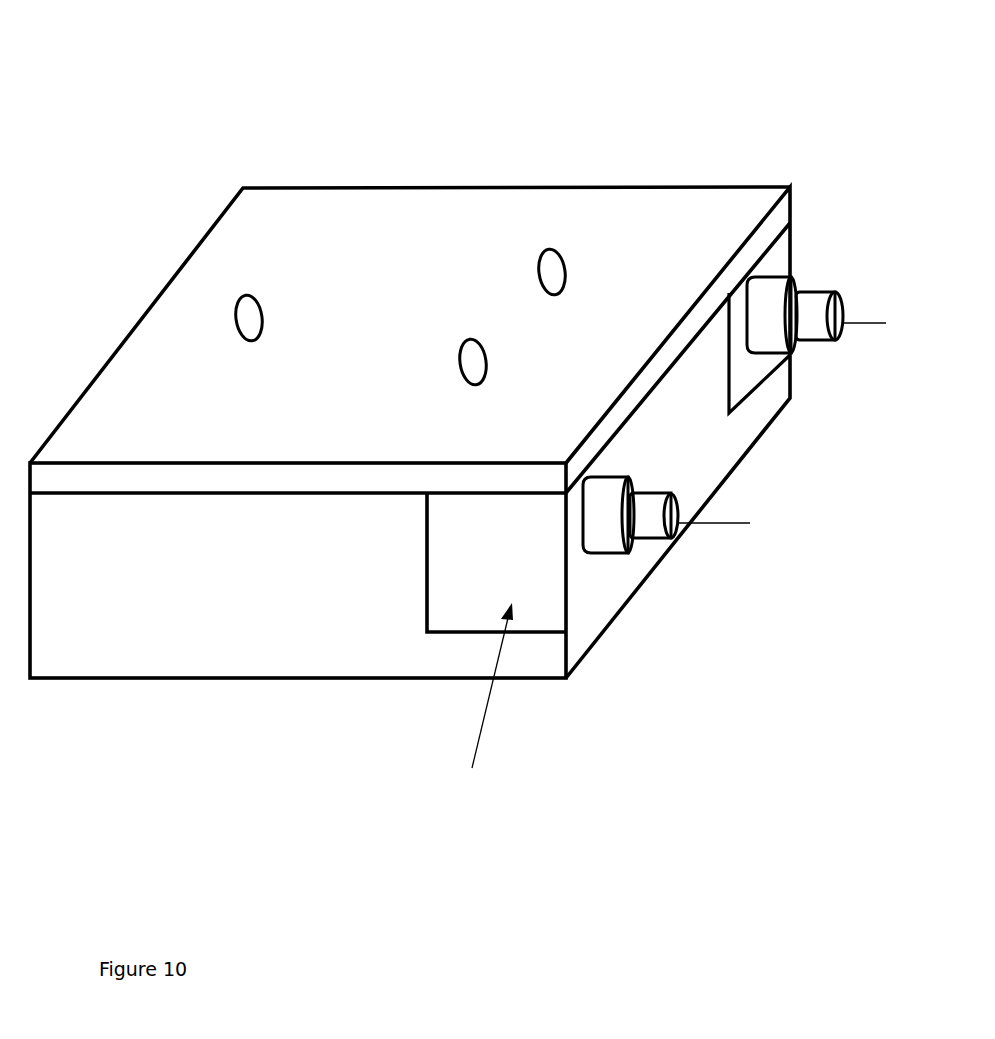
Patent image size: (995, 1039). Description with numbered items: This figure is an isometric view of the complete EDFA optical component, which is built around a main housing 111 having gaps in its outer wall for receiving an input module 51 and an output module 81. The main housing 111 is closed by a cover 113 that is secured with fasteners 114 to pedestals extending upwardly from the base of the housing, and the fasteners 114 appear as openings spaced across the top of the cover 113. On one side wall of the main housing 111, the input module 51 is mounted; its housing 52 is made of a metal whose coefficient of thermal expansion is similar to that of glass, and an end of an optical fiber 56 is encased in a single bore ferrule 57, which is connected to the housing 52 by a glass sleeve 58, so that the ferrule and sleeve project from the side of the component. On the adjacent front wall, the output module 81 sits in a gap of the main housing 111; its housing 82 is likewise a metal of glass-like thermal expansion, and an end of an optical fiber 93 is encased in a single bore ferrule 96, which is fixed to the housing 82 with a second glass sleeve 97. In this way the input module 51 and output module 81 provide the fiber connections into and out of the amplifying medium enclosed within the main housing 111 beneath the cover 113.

The main housing 111 is at (125, 632).
The cover 113 is at (417, 233).
The fasteners 114 is at (245, 325).
The input module 51 is at (790, 223).
The housing 82 is at (462, 586).
The output module 81 is at (484, 701).
The second glass sleeve 97 is at (600, 538).
The single bore ferrule 96 is at (652, 522).
The optical fiber 93 is at (722, 523).
The housing 52 is at (738, 385).
The glass sleeve 58 is at (773, 323).
The single bore ferrule 57 is at (817, 292).
The optical fiber 56 is at (886, 323).